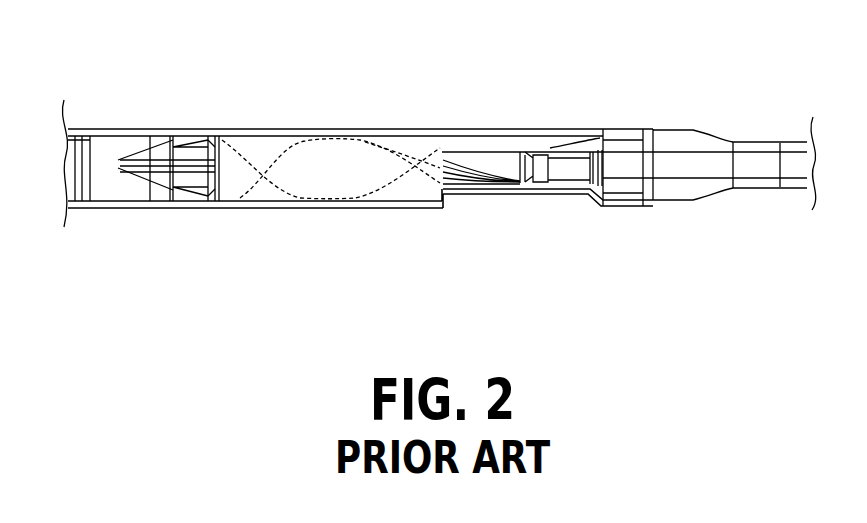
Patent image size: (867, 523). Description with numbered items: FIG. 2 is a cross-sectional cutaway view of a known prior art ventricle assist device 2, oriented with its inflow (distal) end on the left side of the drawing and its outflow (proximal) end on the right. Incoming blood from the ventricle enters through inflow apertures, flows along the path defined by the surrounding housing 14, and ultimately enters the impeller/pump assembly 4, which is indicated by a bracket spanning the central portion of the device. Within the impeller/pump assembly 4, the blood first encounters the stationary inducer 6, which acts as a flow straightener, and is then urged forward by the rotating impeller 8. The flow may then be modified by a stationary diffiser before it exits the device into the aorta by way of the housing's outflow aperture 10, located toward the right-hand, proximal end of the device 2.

The known device 2 is at (652, 72).
The impeller/pump assembly 4 is at (359, 176).
The stationary inducer 6 is at (188, 130).
The rotating impeller 8 is at (360, 108).
The outflow aperture 10 is at (522, 134).
The housing 14 is at (113, 130).